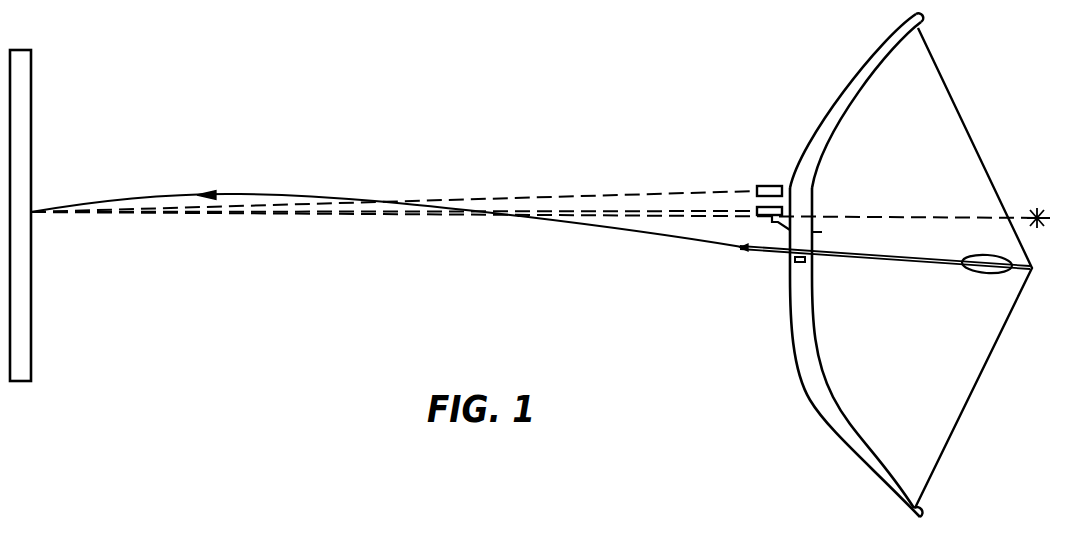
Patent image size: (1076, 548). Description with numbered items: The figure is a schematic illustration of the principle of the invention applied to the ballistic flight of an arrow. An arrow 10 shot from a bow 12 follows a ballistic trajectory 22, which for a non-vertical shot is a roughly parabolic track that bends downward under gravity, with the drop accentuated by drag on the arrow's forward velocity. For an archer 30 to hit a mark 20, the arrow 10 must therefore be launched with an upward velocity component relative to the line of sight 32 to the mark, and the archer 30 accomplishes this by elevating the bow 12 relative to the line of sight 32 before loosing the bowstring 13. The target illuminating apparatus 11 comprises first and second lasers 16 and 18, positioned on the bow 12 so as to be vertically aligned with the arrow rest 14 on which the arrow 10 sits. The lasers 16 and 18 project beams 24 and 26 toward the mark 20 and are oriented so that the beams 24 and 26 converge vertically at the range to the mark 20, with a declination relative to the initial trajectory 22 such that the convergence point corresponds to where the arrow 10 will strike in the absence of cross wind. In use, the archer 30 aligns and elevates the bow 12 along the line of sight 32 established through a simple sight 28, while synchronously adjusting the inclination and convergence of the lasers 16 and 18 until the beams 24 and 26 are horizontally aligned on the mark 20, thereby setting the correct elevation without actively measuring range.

The arrow 10 is at (880, 262).
The target illuminating apparatus 11 is at (817, 265).
The bow 12 is at (834, 100).
The bowstring 13 is at (963, 116).
The arrow rest 14 is at (802, 266).
The first laser 16 is at (762, 186).
The second laser 18 is at (772, 222).
The mark 20 is at (32, 211).
The ballistic trajectory 22 is at (303, 194).
The first beam 24 is at (540, 187).
The second beam 26 is at (626, 214).
The sight 28 is at (822, 232).
The archer 30 is at (1039, 215).
The line of sight 32 is at (923, 217).